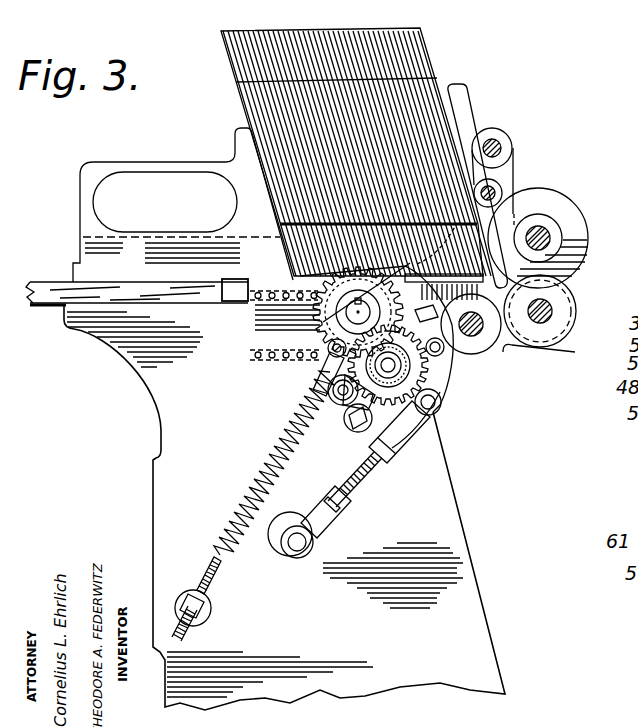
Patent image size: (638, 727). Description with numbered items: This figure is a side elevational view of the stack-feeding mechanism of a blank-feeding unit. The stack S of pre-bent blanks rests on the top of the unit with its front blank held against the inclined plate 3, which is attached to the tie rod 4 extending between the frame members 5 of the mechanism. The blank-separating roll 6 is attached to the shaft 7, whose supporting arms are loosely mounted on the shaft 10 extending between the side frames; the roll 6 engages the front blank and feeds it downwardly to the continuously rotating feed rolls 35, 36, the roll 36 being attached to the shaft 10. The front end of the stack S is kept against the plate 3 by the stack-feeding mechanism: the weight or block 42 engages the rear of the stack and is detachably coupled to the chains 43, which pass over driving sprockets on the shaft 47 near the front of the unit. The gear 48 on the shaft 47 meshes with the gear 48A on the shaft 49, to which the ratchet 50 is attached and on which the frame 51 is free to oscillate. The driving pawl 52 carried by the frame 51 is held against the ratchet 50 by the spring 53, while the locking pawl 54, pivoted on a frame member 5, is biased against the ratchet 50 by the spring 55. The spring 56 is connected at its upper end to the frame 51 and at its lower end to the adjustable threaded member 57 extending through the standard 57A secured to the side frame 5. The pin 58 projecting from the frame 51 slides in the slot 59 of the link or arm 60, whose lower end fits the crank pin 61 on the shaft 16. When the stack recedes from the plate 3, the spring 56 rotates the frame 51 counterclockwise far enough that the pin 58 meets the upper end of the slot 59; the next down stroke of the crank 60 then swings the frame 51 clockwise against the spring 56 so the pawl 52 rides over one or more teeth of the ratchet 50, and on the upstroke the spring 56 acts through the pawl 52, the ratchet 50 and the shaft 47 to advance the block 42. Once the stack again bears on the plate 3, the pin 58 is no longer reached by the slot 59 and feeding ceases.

The stack of pre-bent blanks S is at (428, 88).
The inclined plate 3 is at (458, 116).
The tie rod 4 is at (495, 190).
The frame member 5 is at (480, 587).
The blank-separating roll 6 is at (565, 207).
The shaft 7 is at (547, 238).
The shaft 10 is at (550, 309).
The shaft 16 is at (358, 312).
The feed roll 35 is at (497, 368).
The feed roll 36 is at (538, 346).
The weight or block 42 is at (243, 133).
The chain 43 is at (236, 240).
The shaft 47 is at (323, 322).
The gear 48 is at (310, 298).
The gear 48A is at (320, 358).
The shaft 49 is at (447, 392).
The ratchet 50 is at (440, 370).
The frame 51 is at (440, 405).
The driving pawl 52 is at (474, 334).
The spring 53 is at (471, 324).
The locking pawl 54 is at (344, 406).
The spring 55 is at (360, 432).
The spring 56 is at (275, 462).
The adjustable threaded member 57 is at (221, 588).
The standard 57A is at (213, 616).
The pin 58 is at (440, 423).
The slot 59 is at (430, 450).
The link or arm 60 is at (362, 486).
The crank pin 61 is at (312, 546).